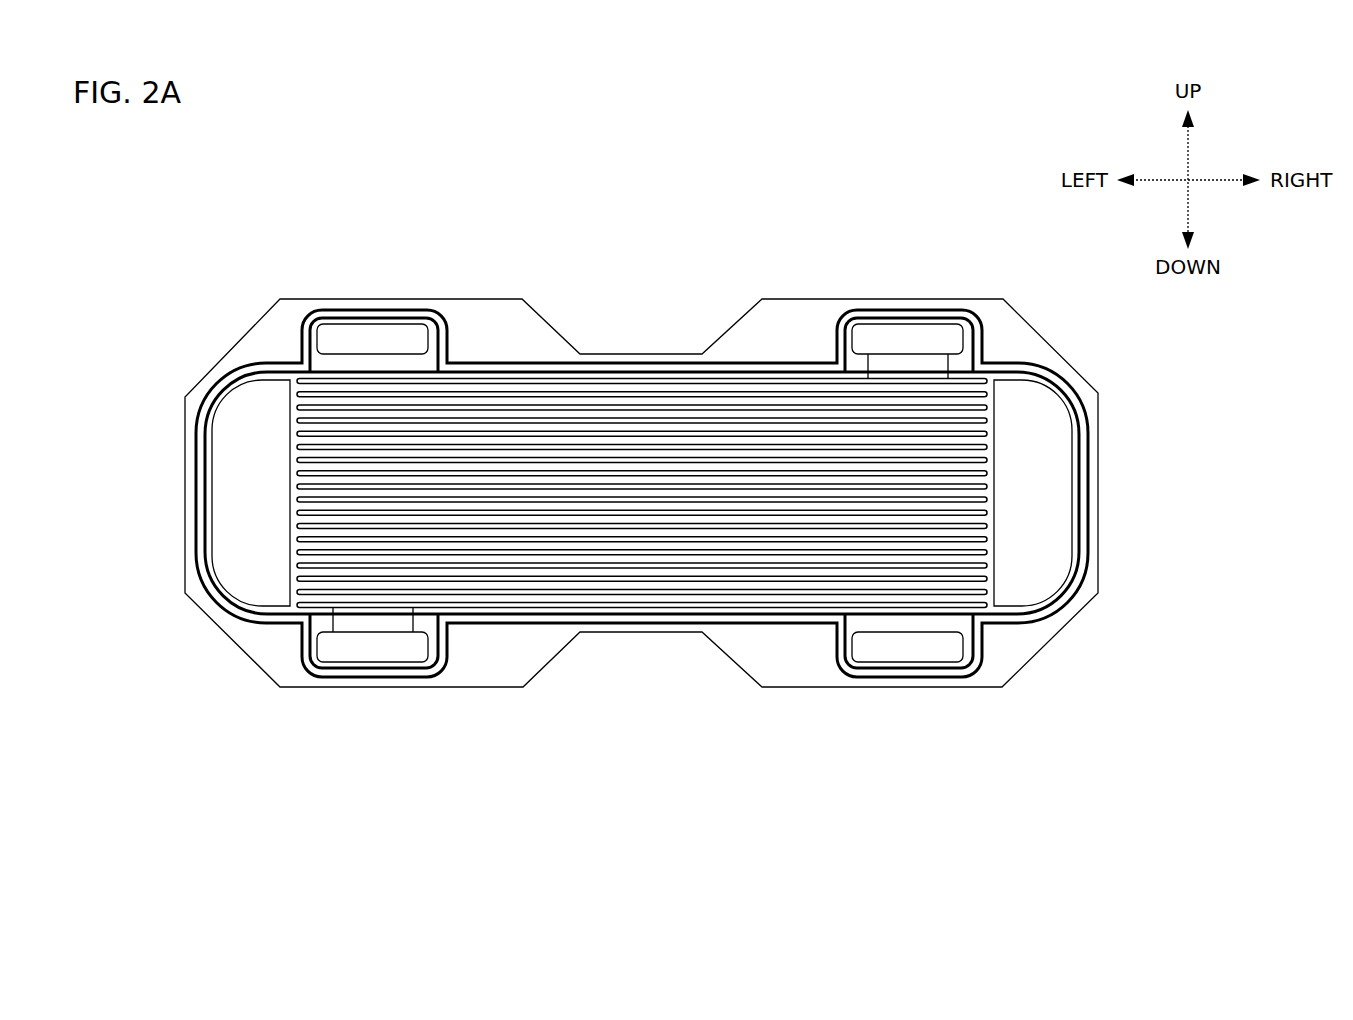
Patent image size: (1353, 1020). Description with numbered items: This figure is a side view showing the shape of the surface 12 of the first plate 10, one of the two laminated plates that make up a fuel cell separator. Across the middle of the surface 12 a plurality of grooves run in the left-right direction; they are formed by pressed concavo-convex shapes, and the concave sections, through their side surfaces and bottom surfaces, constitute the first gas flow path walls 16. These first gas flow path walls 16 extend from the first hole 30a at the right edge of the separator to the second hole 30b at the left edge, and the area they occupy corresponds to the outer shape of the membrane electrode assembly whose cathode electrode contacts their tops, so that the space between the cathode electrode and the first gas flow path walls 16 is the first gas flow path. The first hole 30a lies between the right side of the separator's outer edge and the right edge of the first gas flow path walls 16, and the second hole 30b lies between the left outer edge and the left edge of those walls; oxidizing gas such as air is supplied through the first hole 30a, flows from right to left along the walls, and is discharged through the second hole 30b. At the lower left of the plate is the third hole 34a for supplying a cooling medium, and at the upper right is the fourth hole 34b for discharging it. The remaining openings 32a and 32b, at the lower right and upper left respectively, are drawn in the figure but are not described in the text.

The first plate 10 is at (657, 488).
The surface 12 is at (482, 692).
The first gas flow path walls 16 is at (587, 412).
The first hole 30a is at (1050, 492).
The second hole 30b is at (255, 492).
The lower right manifold 32a is at (895, 640).
The upper left manifold 32b is at (390, 340).
The third hole 34a is at (370, 650).
The fourth hole 34b is at (905, 343).